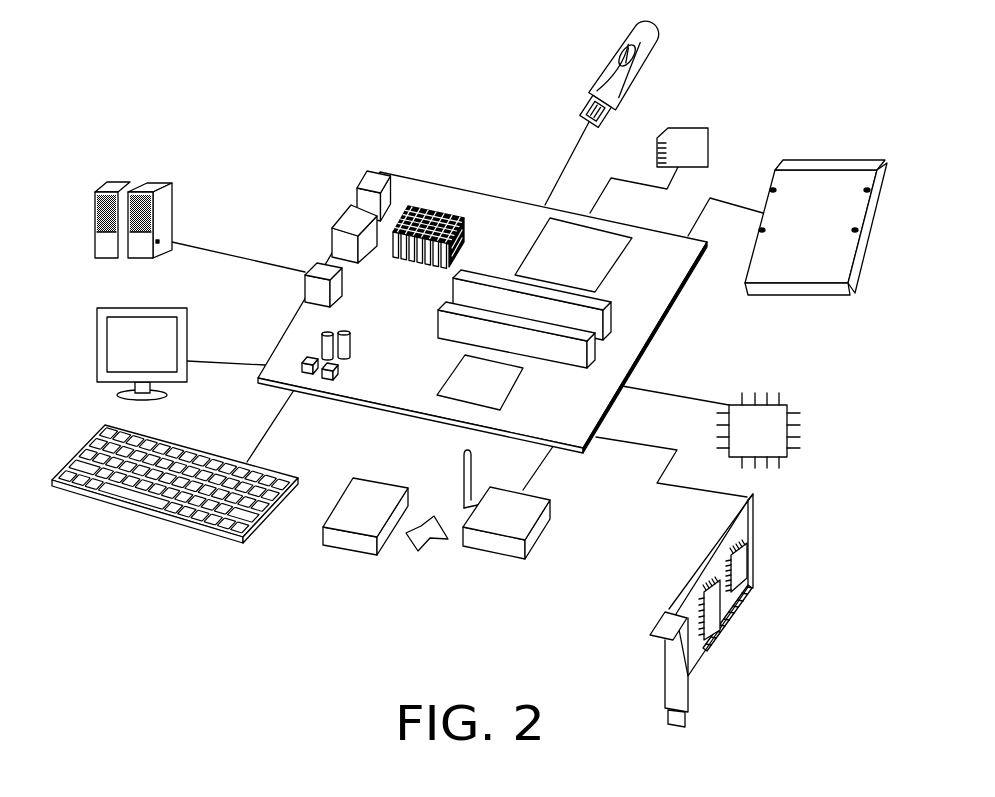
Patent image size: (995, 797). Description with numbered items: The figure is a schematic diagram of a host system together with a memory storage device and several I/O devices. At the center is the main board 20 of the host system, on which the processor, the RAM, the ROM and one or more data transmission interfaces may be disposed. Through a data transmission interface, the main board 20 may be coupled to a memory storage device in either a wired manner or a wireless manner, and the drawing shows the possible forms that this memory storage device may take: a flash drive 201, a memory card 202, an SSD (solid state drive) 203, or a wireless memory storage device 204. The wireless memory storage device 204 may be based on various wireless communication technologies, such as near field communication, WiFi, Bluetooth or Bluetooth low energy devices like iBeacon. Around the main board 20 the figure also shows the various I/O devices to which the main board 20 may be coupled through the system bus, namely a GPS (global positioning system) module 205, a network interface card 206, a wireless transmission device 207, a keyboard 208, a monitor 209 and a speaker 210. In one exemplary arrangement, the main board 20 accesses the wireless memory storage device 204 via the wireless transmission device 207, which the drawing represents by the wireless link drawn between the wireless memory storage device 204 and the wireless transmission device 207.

The main board 20 is at (487, 213).
The flash drive 201 is at (612, 65).
The memory card 202 is at (710, 135).
The SSD (Solid State Drive) 203 is at (833, 154).
The wireless memory storage device 204 is at (337, 493).
The GPS (Global Positioning System) module 205 is at (797, 430).
The network interface card 206 is at (757, 553).
The wireless transmission device 207 is at (543, 538).
The keyboard 208 is at (177, 517).
The monitor 209 is at (97, 363).
The speaker 210 is at (95, 243).